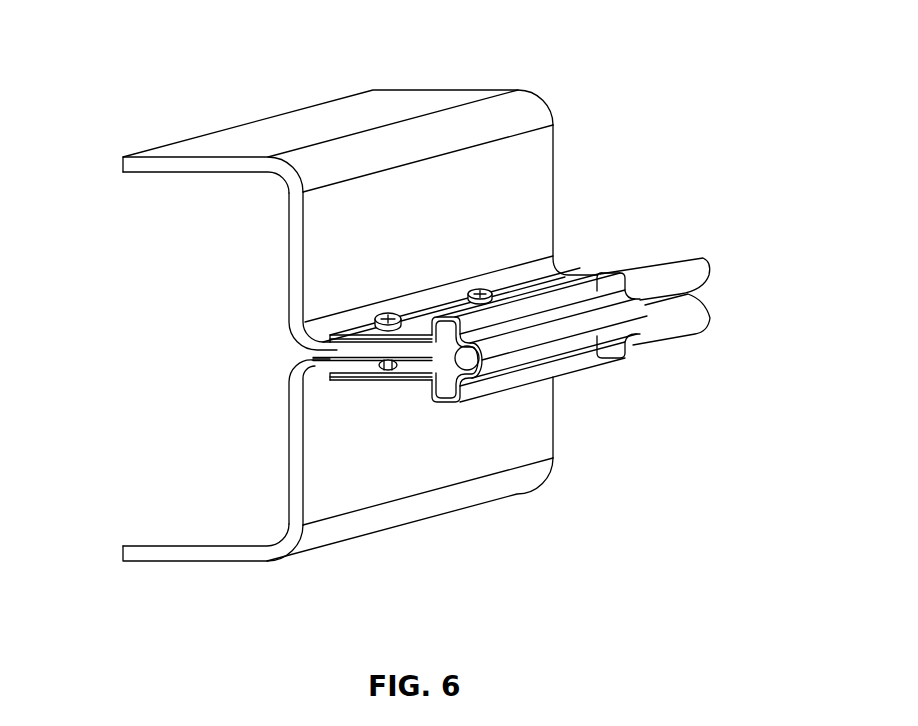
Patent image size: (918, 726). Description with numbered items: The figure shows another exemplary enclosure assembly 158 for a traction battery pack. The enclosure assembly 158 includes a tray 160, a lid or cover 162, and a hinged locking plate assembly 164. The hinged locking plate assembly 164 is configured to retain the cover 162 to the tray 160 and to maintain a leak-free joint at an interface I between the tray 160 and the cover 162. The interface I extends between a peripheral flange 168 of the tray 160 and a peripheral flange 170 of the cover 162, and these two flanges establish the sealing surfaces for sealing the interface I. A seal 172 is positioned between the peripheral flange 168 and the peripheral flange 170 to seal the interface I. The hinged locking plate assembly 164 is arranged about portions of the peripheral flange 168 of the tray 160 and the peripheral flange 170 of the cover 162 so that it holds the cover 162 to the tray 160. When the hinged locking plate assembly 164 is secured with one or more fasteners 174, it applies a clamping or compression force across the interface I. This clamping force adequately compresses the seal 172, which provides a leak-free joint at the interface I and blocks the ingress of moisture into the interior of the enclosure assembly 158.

The enclosure assembly 158 is at (560, 41).
The tray 160 is at (195, 570).
The cover 162 is at (287, 116).
The hinged locking plate assembly 164 is at (622, 249).
The peripheral flange 168 is at (347, 368).
The peripheral flange 170 is at (337, 350).
The seal 172 is at (390, 370).
The fasteners 174 is at (390, 314).
The interface I is at (318, 366).